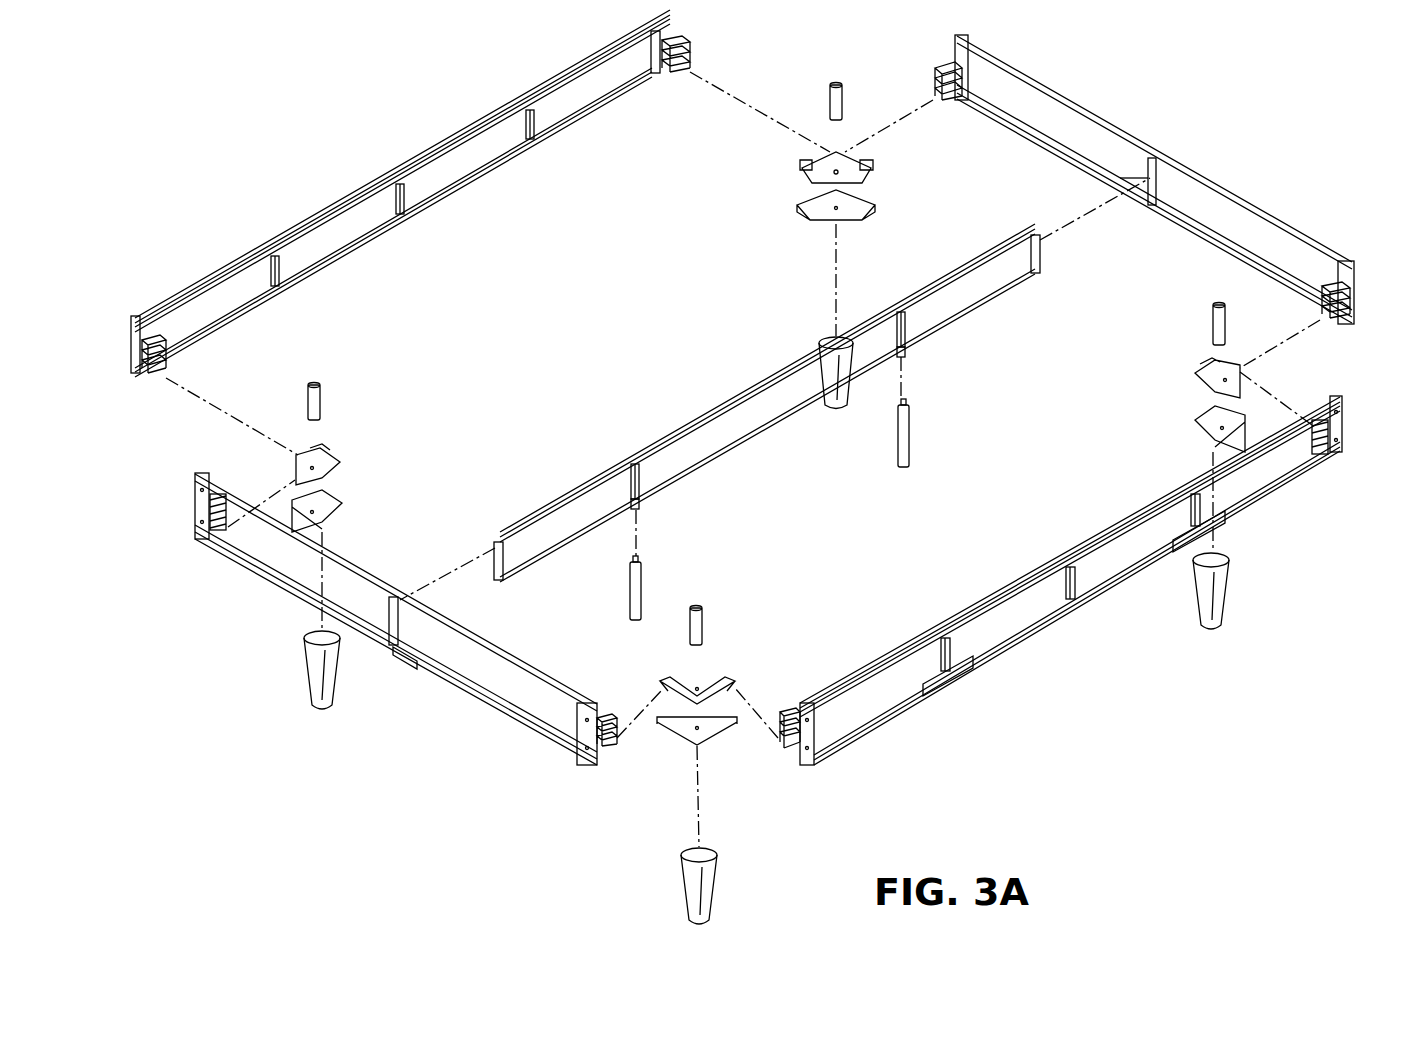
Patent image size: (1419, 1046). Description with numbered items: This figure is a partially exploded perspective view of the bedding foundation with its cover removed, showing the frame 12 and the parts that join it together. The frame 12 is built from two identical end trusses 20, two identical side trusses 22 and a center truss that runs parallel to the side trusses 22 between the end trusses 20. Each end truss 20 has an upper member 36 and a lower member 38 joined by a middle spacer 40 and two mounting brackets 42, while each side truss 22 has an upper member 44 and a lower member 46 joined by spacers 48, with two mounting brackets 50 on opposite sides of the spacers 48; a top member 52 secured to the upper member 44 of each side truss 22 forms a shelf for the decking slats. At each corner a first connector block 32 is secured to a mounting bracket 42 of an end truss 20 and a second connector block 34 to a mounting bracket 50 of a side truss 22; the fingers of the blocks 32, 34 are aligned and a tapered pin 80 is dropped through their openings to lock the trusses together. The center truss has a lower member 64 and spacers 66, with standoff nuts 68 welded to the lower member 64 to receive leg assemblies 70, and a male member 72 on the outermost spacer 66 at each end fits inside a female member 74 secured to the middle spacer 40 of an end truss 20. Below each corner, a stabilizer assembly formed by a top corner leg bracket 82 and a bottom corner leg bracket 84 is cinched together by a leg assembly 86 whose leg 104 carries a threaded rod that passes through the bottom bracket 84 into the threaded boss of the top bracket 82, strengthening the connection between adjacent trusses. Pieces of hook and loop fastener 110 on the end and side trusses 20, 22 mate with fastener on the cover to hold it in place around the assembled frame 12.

The frame 12 is at (745, 463).
The end truss 20 is at (769, 401).
The side truss 22 is at (743, 400).
The first connector block 32 is at (719, 409).
The second connector block 34 is at (775, 412).
The upper member 36 is at (773, 373).
The lower member 38 is at (773, 430).
The middle spacer 40 is at (795, 383).
The mounting bracket 42 is at (769, 401).
The upper member 44 is at (737, 366).
The lower member 46 is at (737, 416).
The spacer 48 is at (735, 390).
The mounting bracket 50 is at (743, 410).
The top member 52 is at (737, 356).
The lower member 64 is at (775, 403).
The spacer 66 is at (749, 383).
The standoff nut 68 is at (794, 449).
The leg assembly 70 is at (769, 509).
The male member 72 is at (775, 407).
The female member 74 is at (772, 401).
The tapered pin 80 is at (766, 336).
The top corner leg bracket 82 is at (768, 428).
The bottom corner leg bracket 84 is at (768, 490).
The leg assembly 86 is at (767, 630).
The leg 104 is at (770, 630).
The hook and loop fastener 110 is at (828, 615).